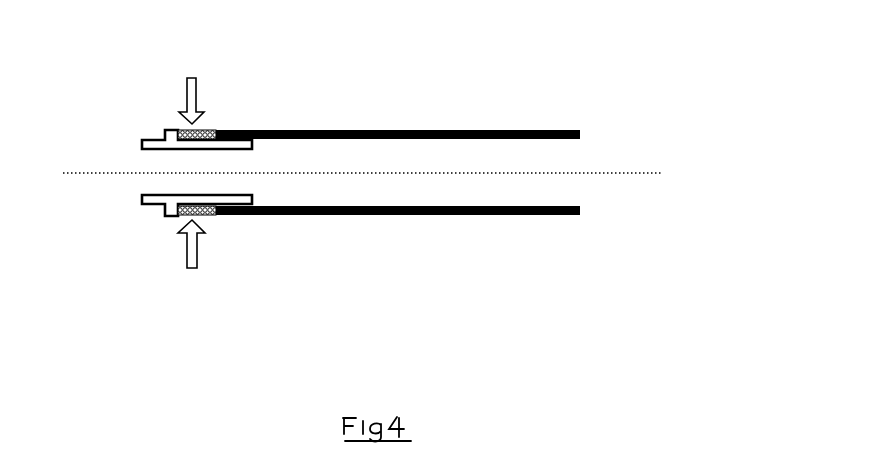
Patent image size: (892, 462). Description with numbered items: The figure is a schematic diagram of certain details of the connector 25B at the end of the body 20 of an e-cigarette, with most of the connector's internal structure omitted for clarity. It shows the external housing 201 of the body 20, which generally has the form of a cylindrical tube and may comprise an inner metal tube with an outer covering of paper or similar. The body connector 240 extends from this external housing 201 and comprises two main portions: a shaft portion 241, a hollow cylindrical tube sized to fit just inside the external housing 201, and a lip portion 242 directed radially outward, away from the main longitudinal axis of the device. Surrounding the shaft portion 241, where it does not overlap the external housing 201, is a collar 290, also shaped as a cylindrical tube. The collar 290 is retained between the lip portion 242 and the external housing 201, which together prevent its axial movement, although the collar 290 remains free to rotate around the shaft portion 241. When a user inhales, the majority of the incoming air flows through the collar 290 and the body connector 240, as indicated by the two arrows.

The body 20 is at (355, 211).
The connector 25B is at (350, 281).
The external housing 201 is at (553, 218).
The body connector 240 is at (162, 147).
The shaft portion 241 is at (240, 199).
The lip portion 242 is at (162, 217).
The collar 290 is at (217, 127).